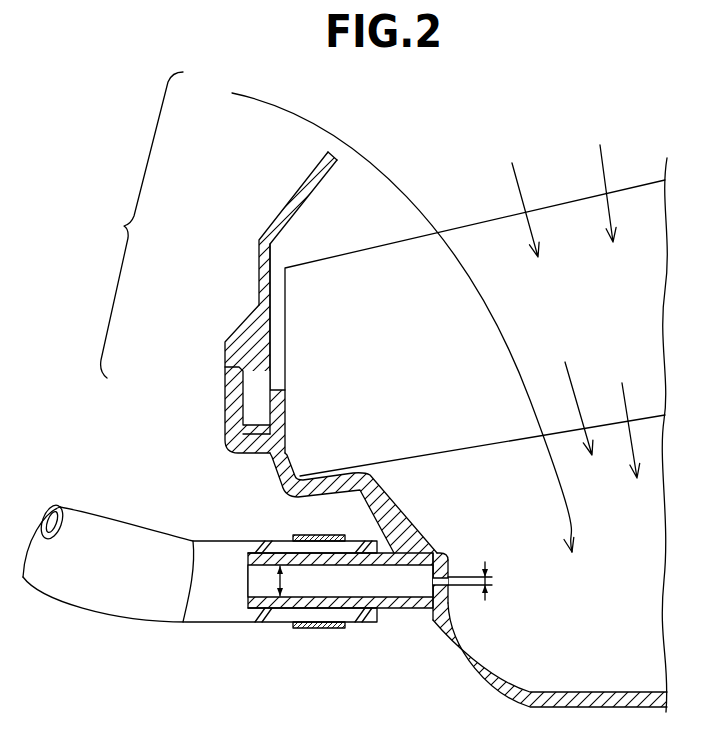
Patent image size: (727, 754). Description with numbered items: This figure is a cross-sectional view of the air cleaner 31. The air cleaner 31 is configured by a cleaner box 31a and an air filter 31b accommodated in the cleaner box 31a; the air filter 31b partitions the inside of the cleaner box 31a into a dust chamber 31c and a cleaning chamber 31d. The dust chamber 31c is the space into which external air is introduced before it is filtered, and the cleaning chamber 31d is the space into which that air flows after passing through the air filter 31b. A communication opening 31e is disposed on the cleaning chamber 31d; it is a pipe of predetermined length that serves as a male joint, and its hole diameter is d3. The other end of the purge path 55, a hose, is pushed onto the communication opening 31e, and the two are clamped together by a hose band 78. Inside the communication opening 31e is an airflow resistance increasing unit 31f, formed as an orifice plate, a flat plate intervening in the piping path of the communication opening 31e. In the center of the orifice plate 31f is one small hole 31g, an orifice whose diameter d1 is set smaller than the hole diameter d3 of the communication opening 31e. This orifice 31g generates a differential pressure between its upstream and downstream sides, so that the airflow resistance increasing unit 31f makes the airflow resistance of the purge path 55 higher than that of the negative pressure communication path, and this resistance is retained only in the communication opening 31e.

The air cleaner 31 is at (380, 389).
The cleaner box 31a is at (223, 384).
The air filter 31b is at (310, 309).
The dust chamber 31c is at (318, 228).
The cleaning chamber 31d is at (378, 315).
The communication opening 31e is at (403, 610).
The airflow resistance increasing unit 31f is at (448, 568).
The small hole 31g is at (433, 582).
The purge path 55 is at (98, 602).
The hose band 78 is at (322, 628).
The diameter of the small hole d1 is at (485, 581).
The hole diameter of the communication opening d3 is at (280, 576).